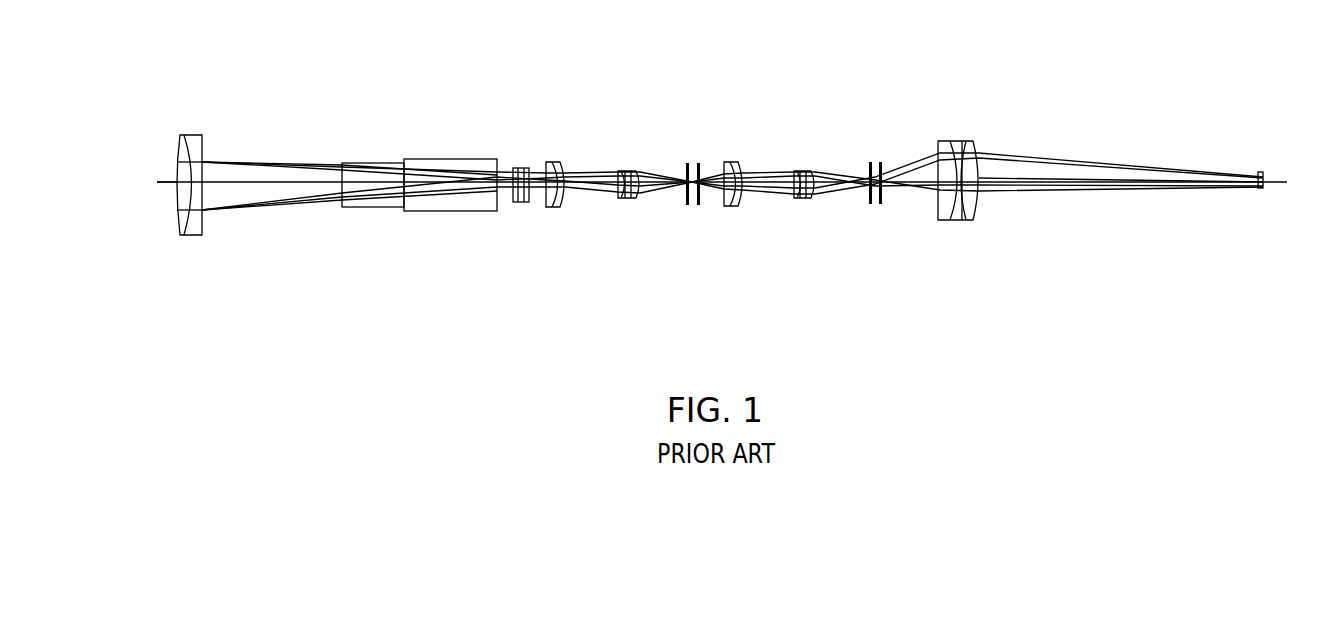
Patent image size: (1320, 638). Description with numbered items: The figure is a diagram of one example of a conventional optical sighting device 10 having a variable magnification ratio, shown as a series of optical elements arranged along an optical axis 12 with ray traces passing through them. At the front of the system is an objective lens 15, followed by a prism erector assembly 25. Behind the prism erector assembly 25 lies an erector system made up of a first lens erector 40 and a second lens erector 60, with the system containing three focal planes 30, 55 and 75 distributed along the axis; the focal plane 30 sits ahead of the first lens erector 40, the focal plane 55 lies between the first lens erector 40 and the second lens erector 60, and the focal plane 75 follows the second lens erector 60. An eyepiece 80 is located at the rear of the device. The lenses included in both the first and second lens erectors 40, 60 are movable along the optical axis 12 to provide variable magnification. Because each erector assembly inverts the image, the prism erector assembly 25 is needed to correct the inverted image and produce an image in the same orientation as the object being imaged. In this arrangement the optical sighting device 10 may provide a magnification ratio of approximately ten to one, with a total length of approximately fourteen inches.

The optical sighting device 10 is at (274, 64).
The optical axis 12 is at (147, 197).
The objective lens 15 is at (198, 241).
The prism erector assembly 25 is at (409, 215).
The focal plane 30 is at (519, 150).
The first lens erector 40 is at (640, 237).
The focal plane 55 is at (691, 150).
The second lens erector 60 is at (822, 237).
The focal plane 75 is at (875, 150).
The eyepiece 80 is at (968, 229).